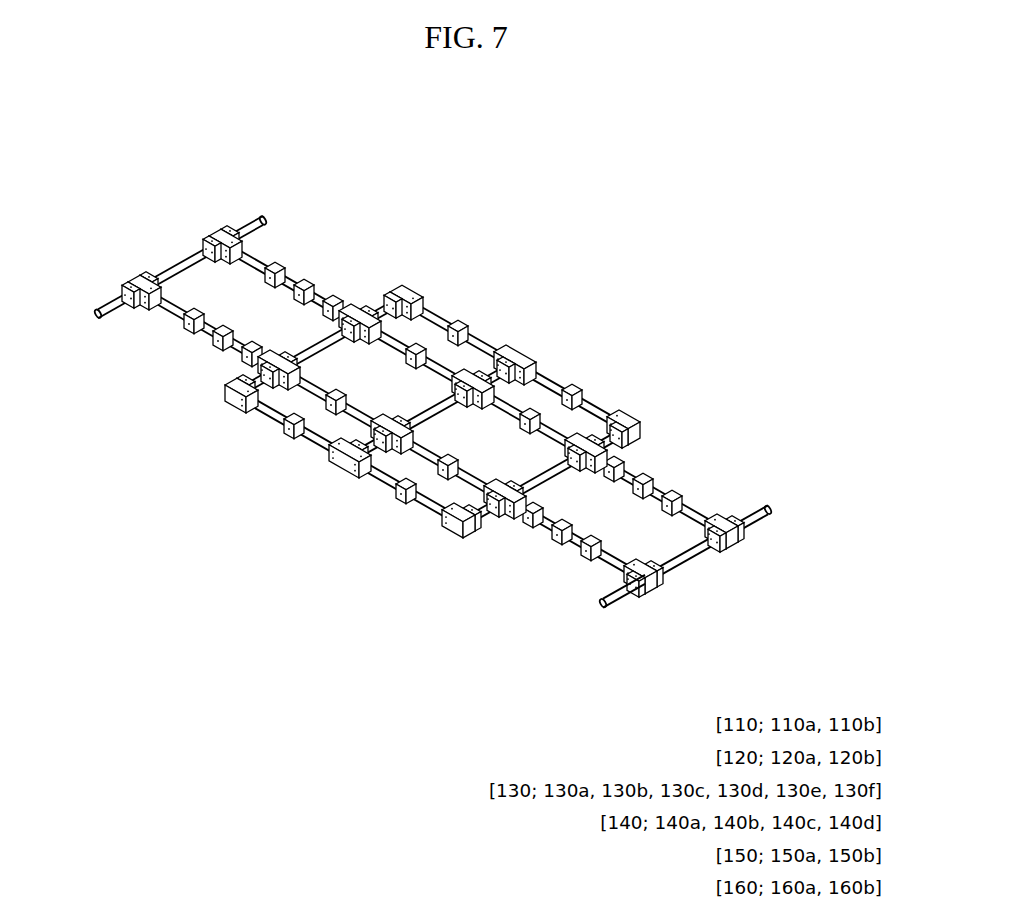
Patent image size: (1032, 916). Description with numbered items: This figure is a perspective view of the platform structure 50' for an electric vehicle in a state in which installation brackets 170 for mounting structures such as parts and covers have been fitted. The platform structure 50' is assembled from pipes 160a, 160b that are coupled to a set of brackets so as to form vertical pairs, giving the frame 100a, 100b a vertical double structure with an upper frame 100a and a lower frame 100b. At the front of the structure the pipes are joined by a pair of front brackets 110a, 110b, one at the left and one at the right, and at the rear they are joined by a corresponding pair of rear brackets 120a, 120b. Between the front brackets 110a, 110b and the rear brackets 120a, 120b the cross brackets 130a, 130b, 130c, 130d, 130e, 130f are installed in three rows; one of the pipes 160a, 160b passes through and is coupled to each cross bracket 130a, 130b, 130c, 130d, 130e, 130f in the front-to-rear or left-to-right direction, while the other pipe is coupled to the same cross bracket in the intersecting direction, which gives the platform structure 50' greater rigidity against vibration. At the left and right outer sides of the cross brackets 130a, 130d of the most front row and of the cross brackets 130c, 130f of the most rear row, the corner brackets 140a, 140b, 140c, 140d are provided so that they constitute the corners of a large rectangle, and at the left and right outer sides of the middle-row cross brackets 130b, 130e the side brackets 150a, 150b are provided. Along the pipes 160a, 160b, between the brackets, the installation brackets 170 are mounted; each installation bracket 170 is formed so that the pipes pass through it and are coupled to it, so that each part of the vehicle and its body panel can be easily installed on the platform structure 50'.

The platform structure 50' is at (845, 124).
The upper frame 100a is at (265, 211).
The lower frame 100b is at (105, 333).
The front bracket 110a is at (732, 548).
The front bracket 110b is at (648, 600).
The rear bracket 120a is at (224, 228).
The rear bracket 120b is at (144, 272).
The cross bracket 130a is at (591, 438).
The cross bracket 130b is at (478, 373).
The cross bracket 130c is at (366, 306).
The cross bracket 130d is at (505, 517).
The cross bracket 130e is at (394, 452).
The cross bracket 130f is at (283, 392).
The corner bracket 140a is at (634, 419).
The corner bracket 140b is at (410, 289).
The corner bracket 140c is at (459, 535).
The corner bracket 140d is at (235, 404).
The side bracket 150a is at (522, 355).
The side bracket 150b is at (338, 470).
The pipe 160a is at (750, 516).
The pipe 160b is at (753, 534).
The installation bracket 170 is at (190, 338).